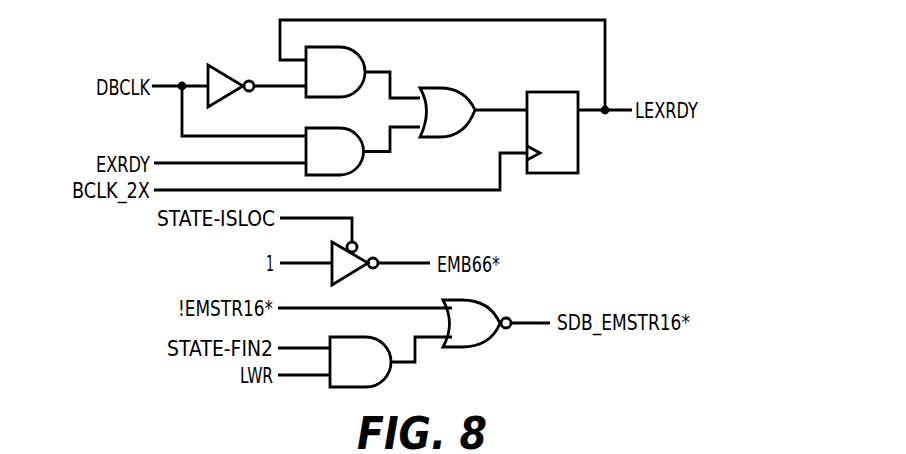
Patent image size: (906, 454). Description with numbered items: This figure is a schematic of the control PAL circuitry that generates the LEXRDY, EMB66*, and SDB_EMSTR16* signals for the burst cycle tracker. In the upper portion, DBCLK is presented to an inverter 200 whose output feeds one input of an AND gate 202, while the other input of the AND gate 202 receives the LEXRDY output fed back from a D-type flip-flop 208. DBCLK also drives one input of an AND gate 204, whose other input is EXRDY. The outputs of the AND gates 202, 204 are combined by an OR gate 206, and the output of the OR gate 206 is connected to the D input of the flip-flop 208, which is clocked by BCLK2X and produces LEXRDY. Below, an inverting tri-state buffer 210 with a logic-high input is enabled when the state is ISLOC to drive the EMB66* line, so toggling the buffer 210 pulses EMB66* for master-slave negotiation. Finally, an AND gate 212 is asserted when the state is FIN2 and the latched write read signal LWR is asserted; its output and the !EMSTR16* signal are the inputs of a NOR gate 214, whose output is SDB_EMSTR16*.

The inverter 200 is at (226, 67).
The AND gate 202 is at (358, 52).
The AND gate 204 is at (358, 166).
The OR gate 206 is at (447, 89).
The D-type flip-flop 208 is at (578, 153).
The inverting tri-state buffer 210 is at (355, 275).
The AND gate 212 is at (386, 378).
The NOR gate 214 is at (490, 302).